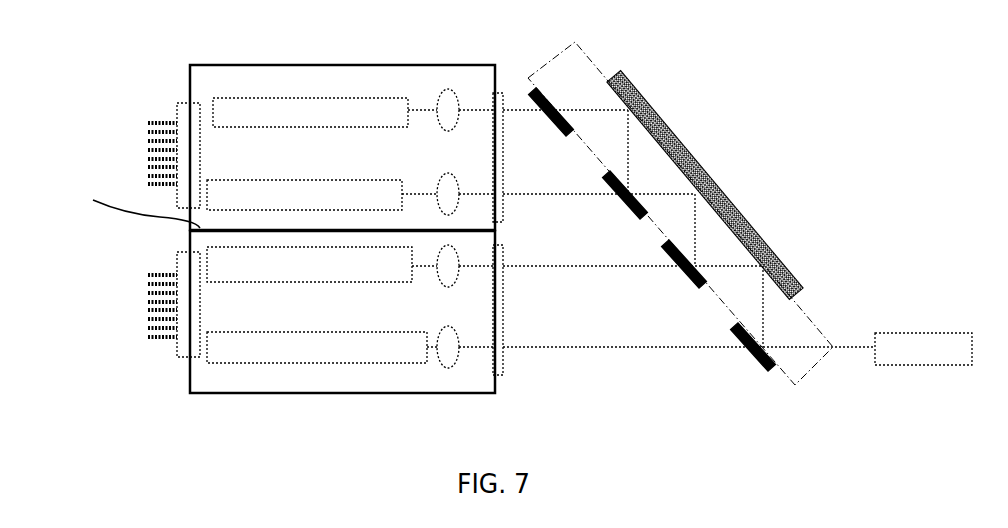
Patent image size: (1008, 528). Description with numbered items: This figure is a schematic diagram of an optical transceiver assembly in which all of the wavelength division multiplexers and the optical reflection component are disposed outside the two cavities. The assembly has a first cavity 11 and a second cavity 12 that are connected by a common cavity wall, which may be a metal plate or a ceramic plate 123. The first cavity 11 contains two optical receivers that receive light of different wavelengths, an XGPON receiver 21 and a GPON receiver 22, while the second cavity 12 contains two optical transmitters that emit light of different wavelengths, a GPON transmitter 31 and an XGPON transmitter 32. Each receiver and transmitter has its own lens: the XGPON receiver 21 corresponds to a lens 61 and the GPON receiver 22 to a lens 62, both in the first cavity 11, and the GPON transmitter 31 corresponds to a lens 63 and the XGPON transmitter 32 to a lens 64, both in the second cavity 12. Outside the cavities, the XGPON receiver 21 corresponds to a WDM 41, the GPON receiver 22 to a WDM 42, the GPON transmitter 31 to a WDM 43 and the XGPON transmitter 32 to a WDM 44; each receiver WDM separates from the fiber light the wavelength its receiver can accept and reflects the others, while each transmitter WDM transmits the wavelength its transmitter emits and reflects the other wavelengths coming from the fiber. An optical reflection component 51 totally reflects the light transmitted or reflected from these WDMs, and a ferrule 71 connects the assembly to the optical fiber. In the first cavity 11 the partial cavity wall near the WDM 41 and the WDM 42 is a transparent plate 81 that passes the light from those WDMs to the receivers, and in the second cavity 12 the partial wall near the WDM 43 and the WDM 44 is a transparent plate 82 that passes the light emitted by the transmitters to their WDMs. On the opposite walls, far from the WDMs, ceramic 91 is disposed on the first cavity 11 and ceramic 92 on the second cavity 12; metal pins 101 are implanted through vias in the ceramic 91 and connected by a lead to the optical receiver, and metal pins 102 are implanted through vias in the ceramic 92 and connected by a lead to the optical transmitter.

The first cavity 11 is at (295, 63).
The second cavity 12 is at (295, 398).
The ceramic plate 123 is at (128, 207).
The XGPON receiver 21 is at (308, 128).
The GPON receiver 22 is at (340, 178).
The GPON transmitter 31 is at (300, 284).
The XGPON transmitter 32 is at (317, 331).
The WDM 41 is at (547, 133).
The WDM 42 is at (620, 216).
The WDM 43 is at (680, 286).
The WDM 44 is at (748, 371).
The optical reflection component 51 is at (647, 107).
The lens 61 is at (449, 131).
The lens 62 is at (446, 177).
The lens 63 is at (448, 287).
The lens 64 is at (435, 330).
The ferrule 71 is at (900, 325).
The transparent plate 81 is at (503, 208).
The transparent plate 82 is at (503, 366).
The ceramic 91 is at (176, 108).
The ceramic 92 is at (180, 253).
The metal pins 101 is at (135, 122).
The metal pins 102 is at (135, 273).